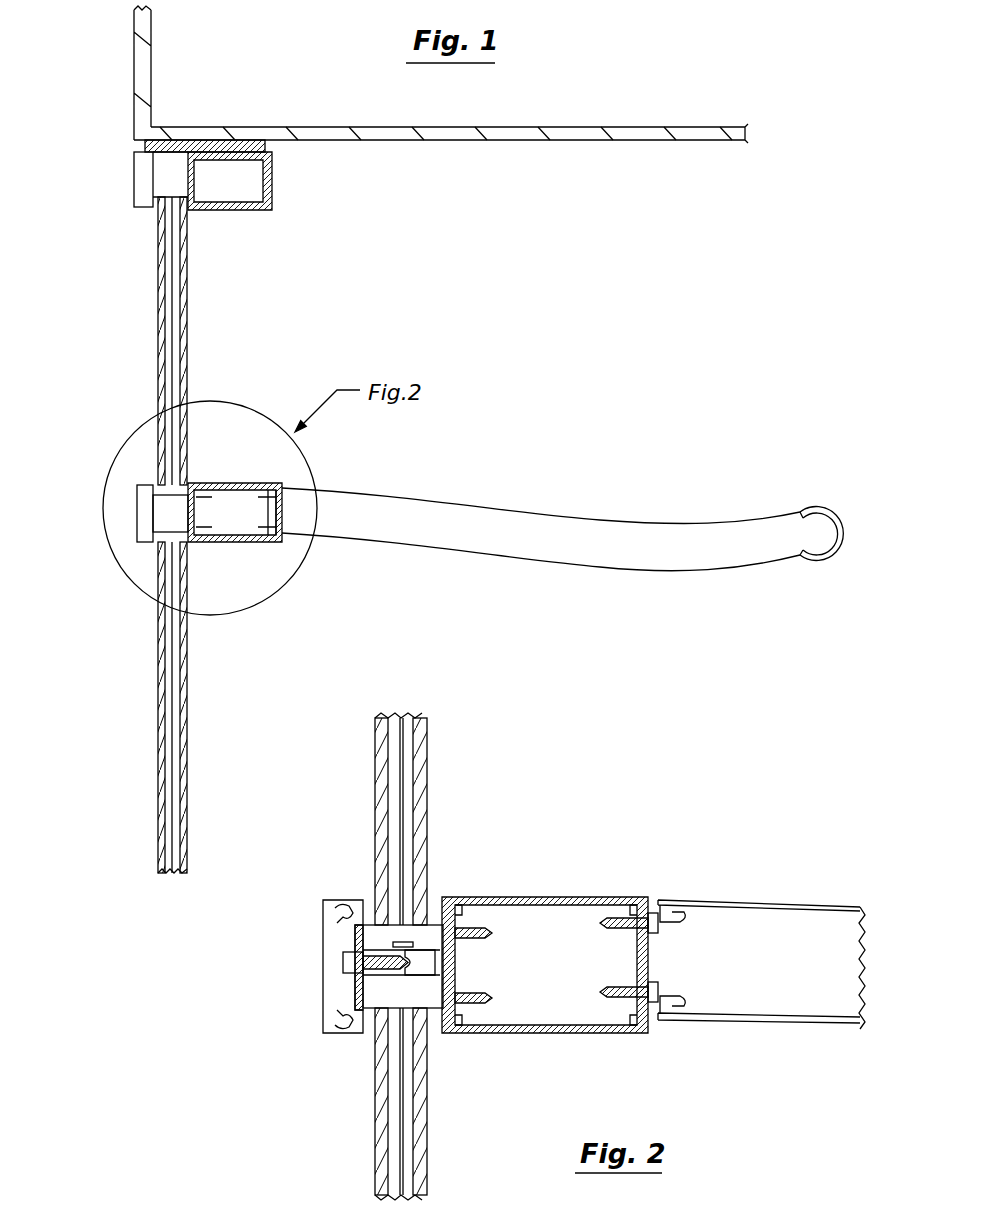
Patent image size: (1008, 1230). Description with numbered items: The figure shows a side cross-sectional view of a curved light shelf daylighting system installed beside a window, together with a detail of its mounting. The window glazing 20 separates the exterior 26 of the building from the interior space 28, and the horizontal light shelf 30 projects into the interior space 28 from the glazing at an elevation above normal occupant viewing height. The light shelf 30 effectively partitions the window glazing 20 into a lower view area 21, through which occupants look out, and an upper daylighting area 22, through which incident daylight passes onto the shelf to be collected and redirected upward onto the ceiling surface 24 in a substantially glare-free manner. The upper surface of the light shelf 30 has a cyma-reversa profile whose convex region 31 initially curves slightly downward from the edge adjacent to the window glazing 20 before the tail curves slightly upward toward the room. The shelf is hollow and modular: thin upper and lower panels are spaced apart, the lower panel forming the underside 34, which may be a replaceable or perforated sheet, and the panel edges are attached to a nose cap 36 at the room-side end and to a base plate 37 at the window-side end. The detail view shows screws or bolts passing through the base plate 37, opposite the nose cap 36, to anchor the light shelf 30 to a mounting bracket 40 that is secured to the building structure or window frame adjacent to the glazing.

In FIG. 1, the window glazing 20 is at (148, 786).
In FIG. 1, the view area 21 is at (183, 727).
In FIG. 2, the view area 21 is at (427, 1137).
In FIG. 1, the daylighting area 22 is at (212, 535).
In FIG. 2, the daylighting area 22 is at (442, 956).
In FIG. 1, the ceiling surface 24 is at (510, 142).
In FIG. 1, the exterior 26 is at (119, 346).
In FIG. 2, the exterior 26 is at (355, 854).
In FIG. 1, the interior space 28 is at (276, 296).
In FIG. 2, the interior space 28 is at (490, 863).
In FIG. 1, the light shelf 30 is at (565, 499).
In FIG. 2, the light shelf 30 is at (764, 919).
In FIG. 1, the convex region 31 is at (510, 503).
In FIG. 2, the convex region 31 is at (751, 898).
In FIG. 1, the underside 34 is at (557, 563).
In FIG. 2, the underside 34 is at (745, 1022).
In FIG. 1, the nose cap 36 is at (836, 562).
In FIG. 1, the base plate 37 is at (282, 512).
In FIG. 2, the base plate 37 is at (455, 968).
In FIG. 1, the mounting bracket 40 is at (235, 542).
In FIG. 2, the mounting bracket 40 is at (560, 896).